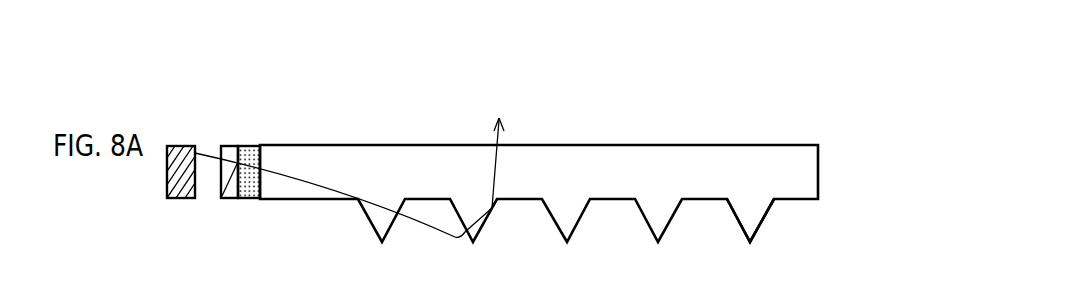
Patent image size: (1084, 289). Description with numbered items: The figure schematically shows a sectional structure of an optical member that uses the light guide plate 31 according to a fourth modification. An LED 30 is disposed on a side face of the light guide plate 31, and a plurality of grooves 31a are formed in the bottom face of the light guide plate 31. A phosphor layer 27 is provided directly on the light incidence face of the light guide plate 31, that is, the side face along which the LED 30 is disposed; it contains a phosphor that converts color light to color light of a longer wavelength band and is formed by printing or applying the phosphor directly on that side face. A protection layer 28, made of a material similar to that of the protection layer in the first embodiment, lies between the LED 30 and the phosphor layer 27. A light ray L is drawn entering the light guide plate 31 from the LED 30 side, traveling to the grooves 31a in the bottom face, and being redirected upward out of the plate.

The phosphor layer 27 is at (249, 148).
The protection layer 28 is at (229, 148).
The LED 30 is at (178, 147).
The light guide plate 31 is at (810, 171).
The grooves 31a is at (770, 213).
The light ray L is at (350, 163).